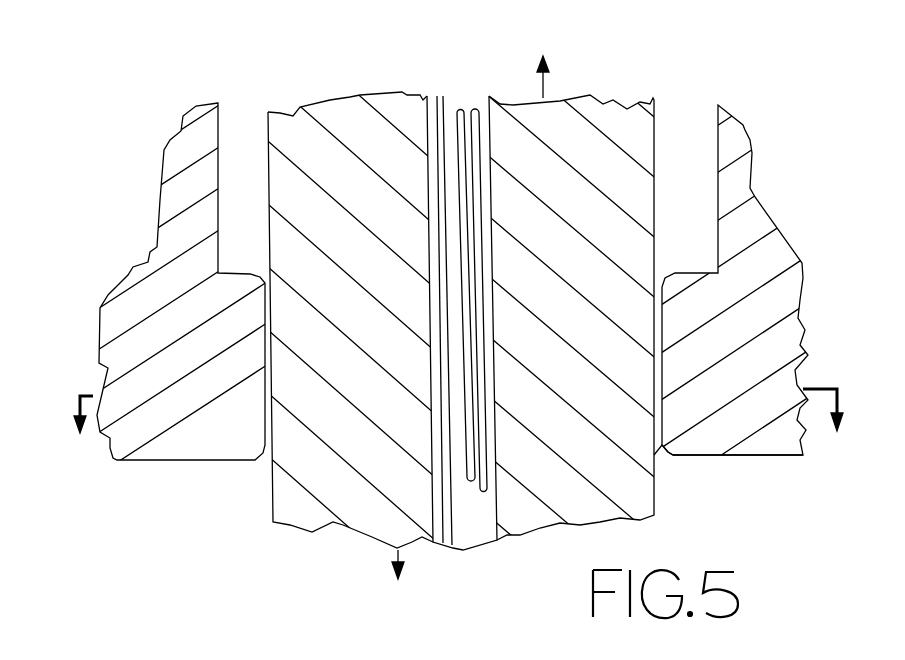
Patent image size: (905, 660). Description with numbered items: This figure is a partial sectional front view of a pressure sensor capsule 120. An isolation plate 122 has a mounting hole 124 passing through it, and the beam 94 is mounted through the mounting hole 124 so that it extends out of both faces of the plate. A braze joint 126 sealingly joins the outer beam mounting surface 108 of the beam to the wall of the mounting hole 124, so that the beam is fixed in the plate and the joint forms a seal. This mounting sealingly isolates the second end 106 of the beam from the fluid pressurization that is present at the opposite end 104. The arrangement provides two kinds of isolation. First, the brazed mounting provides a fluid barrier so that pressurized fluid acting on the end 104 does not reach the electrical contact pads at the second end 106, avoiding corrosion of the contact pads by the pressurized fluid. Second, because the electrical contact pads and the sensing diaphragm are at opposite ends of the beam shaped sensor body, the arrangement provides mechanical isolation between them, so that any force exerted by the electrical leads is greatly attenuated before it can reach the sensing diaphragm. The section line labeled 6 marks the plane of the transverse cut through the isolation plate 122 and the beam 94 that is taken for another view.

The pressure sensor capsule 120 is at (248, 99).
The beam 94 is at (347, 98).
The outer beam mounting surface 108 is at (654, 240).
The mounting hole 124 is at (663, 355).
The isolation plate 122 is at (693, 457).
The braze joint 126 is at (665, 463).
The end 104 is at (545, 58).
The second end 106 is at (401, 582).
The section line 6- 6 is at (457, 418).